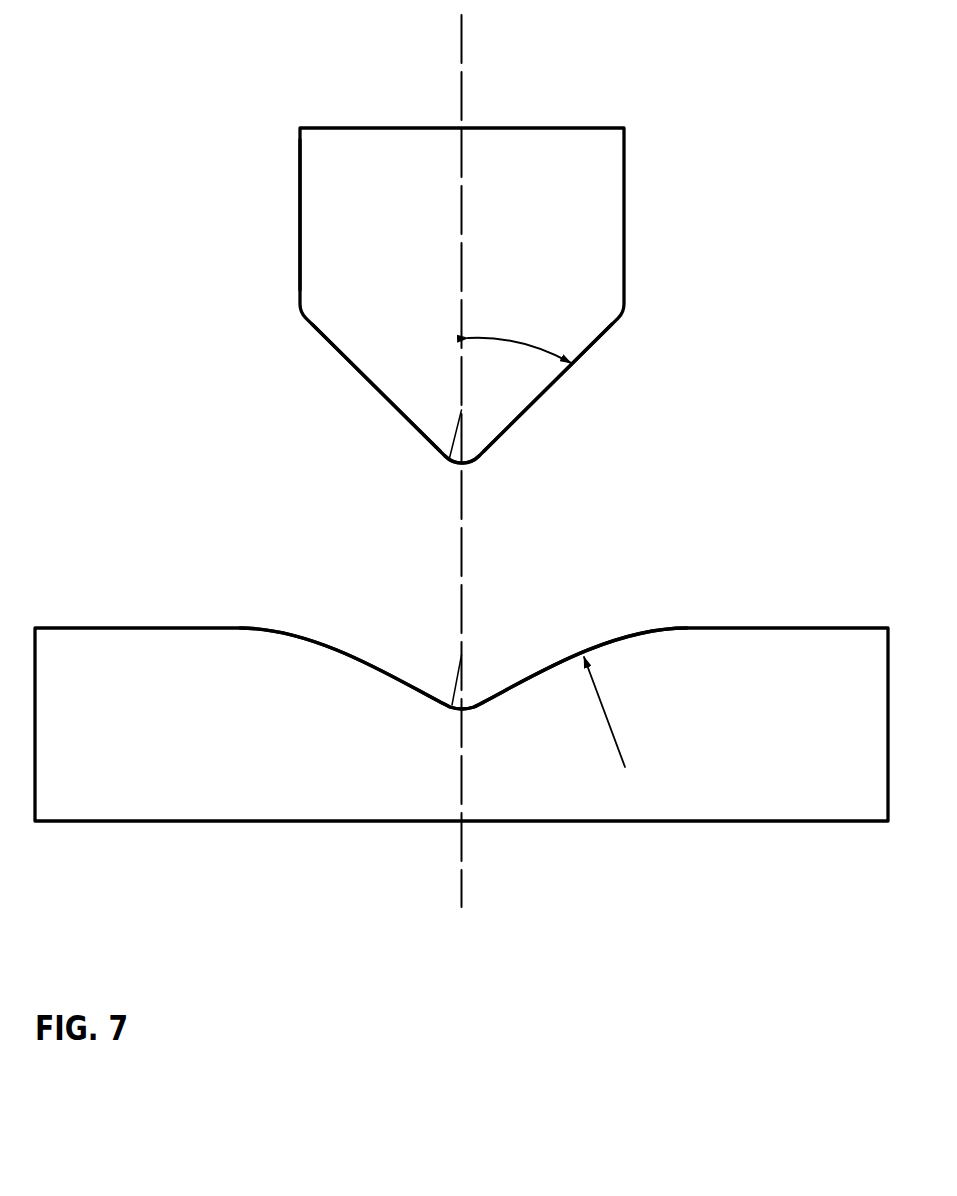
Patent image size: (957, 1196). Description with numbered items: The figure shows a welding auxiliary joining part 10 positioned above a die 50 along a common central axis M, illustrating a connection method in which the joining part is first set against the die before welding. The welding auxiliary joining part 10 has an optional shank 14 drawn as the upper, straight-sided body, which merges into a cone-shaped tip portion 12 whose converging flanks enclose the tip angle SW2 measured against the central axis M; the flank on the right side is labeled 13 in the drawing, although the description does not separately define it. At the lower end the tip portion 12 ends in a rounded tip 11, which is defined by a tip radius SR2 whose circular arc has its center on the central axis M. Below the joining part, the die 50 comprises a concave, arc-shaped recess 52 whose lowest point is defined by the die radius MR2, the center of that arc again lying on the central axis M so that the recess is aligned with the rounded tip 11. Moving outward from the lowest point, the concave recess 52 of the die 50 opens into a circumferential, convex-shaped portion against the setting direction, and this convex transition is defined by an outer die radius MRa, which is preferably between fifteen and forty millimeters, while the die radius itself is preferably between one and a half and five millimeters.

The welding auxiliary joining part 10 is at (680, 203).
The rounded tip 11 is at (462, 463).
The tip portion 12 is at (336, 369).
The right flank 13 is at (555, 392).
The shank 14 is at (299, 188).
The die 50 is at (814, 738).
The concave recess 52 is at (378, 669).
The central axis M is at (462, 62).
The tip angle SW2 is at (518, 342).
The tip radius SR2 is at (448, 458).
The die radius MR2 is at (450, 703).
The outer die radius MRa is at (607, 715).